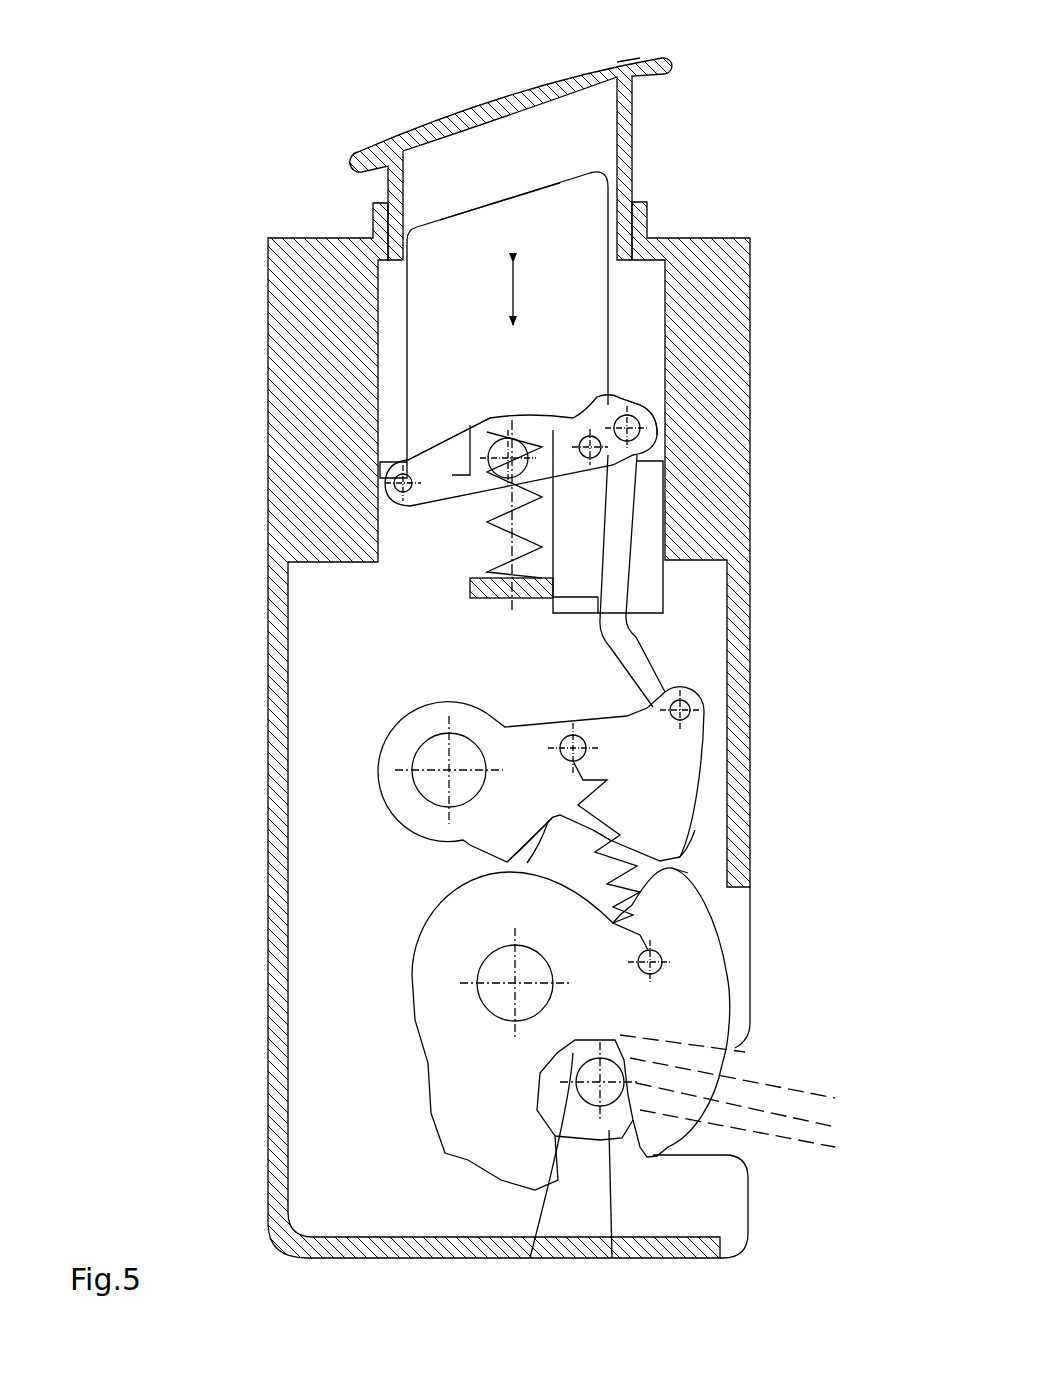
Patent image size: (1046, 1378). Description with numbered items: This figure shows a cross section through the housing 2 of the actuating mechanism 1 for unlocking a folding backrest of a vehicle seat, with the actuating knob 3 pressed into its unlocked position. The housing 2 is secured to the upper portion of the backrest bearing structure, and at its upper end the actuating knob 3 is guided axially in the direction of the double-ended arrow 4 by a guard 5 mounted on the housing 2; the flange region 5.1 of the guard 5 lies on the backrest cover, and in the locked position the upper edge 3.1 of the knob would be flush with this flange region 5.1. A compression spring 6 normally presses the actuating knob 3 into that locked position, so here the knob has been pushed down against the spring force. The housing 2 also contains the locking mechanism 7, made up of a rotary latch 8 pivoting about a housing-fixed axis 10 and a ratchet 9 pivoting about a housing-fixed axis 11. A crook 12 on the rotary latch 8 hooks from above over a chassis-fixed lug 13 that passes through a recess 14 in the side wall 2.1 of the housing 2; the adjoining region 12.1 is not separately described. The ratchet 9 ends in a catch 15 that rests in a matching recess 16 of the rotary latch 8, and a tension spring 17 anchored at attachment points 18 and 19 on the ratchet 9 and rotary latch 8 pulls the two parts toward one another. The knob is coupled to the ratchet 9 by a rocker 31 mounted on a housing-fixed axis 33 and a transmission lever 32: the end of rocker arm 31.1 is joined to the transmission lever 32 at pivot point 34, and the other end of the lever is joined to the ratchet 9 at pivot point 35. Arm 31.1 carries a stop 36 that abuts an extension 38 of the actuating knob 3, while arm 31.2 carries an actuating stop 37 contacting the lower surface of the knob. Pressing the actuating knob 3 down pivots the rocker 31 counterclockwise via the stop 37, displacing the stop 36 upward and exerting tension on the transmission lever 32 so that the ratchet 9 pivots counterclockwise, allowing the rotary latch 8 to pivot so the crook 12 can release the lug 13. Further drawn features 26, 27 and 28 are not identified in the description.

The actuating mechanism 1 is at (240, 160).
The housing 2 is at (268, 688).
The side wall 2.1 is at (745, 1220).
The actuating knob 3 is at (585, 232).
The upper edge 3.1 is at (478, 200).
The double-ended arrow 4 is at (510, 292).
The guard 5 is at (625, 132).
The flange region 5.1 is at (618, 62).
The compression spring 6 is at (477, 545).
The locking mechanism 7 is at (334, 902).
The rotary latch 8 is at (432, 1082).
The ratchet 9 is at (396, 808).
The axis 10 is at (487, 987).
The axis 11 is at (428, 762).
The crook 12 is at (612, 1258).
The striker plate edge 12.1 is at (530, 1258).
The lug 13 is at (607, 1082).
The recess 14 is at (715, 1145).
The catch 15 is at (680, 857).
The recess 16 is at (597, 880).
The tension spring 17 is at (600, 812).
The attachment point 18 is at (570, 740).
The attachment point 19 is at (664, 962).
The support plate 26 is at (485, 600).
The catch 27 is at (675, 872).
The pawl tooth 28 is at (505, 862).
The rocker 31 is at (462, 495).
The rocker arm 31.1 is at (588, 412).
The rocker arm 31.2 is at (443, 447).
The transmission lever 32 is at (620, 565).
The axis 33 is at (490, 444).
The pivot point 34 is at (642, 430).
The pivot point 35 is at (692, 707).
The stop 36 is at (634, 413).
The actuating stop 37 is at (395, 484).
The extension 38 is at (650, 607).